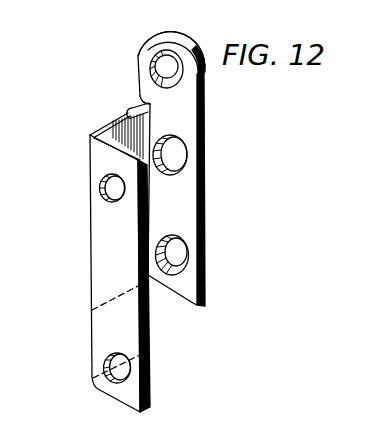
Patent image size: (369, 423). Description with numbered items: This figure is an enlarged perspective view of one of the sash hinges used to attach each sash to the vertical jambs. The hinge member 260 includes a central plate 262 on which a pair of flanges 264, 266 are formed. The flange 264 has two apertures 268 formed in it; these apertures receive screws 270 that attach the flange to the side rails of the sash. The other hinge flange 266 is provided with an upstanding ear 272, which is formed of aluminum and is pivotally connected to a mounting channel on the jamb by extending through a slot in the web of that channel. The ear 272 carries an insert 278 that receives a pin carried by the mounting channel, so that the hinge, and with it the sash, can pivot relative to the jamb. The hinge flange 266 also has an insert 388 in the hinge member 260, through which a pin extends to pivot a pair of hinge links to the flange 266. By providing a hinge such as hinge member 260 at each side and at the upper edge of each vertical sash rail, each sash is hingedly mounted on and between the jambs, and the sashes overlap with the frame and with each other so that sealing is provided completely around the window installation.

The hinge member 260 is at (206, 187).
The central plate 262 is at (142, 112).
The flange 264 is at (110, 223).
The hinge flange 266 is at (182, 124).
The apertures 268 is at (99, 184).
The screws 270 is at (82, 4).
The upstanding ear 272 is at (152, 42).
The insert 278 is at (172, 56).
The insert 388 is at (173, 273).